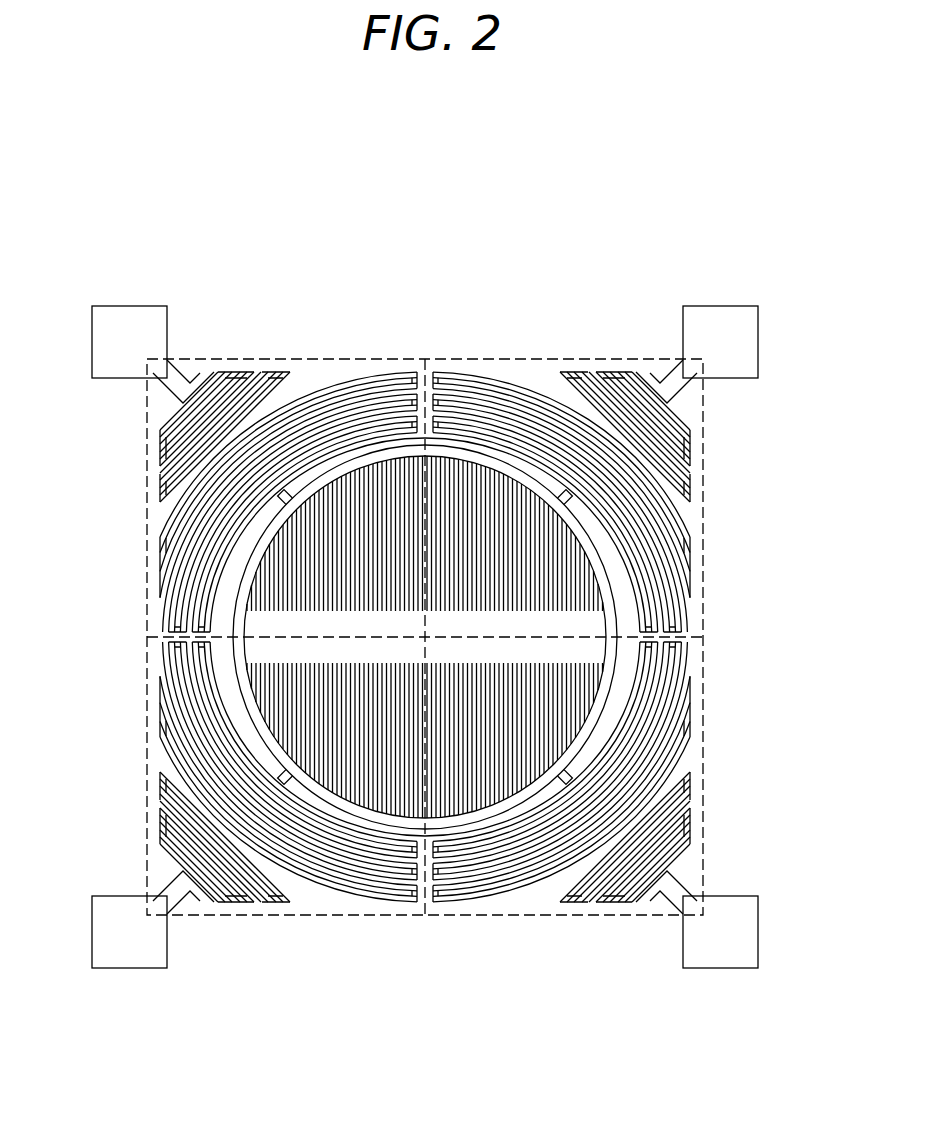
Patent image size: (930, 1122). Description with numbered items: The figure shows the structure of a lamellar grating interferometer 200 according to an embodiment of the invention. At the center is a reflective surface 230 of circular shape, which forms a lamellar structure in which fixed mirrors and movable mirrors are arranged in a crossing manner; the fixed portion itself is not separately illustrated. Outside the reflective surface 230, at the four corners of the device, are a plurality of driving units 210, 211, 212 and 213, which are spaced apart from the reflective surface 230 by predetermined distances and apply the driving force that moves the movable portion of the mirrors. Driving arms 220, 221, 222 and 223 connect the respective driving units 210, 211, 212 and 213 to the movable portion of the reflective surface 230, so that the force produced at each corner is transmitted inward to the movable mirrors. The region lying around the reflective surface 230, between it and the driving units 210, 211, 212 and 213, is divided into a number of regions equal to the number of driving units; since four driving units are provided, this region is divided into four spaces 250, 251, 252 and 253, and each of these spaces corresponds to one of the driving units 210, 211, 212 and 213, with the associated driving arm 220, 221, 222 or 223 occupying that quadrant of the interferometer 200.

The lamellar grating interferometer 200 is at (425, 274).
The driving unit 210 is at (727, 318).
The driving unit 211 is at (735, 962).
The driving unit 212 is at (123, 962).
The driving unit 213 is at (123, 318).
The driving arm 220 is at (690, 550).
The driving arm 221 is at (690, 776).
The driving arm 222 is at (160, 700).
The driving arm 223 is at (160, 547).
The reflective surface 230 is at (605, 675).
The space 250 is at (695, 426).
The space 251 is at (690, 850).
The space 252 is at (160, 822).
The space 253 is at (188, 367).